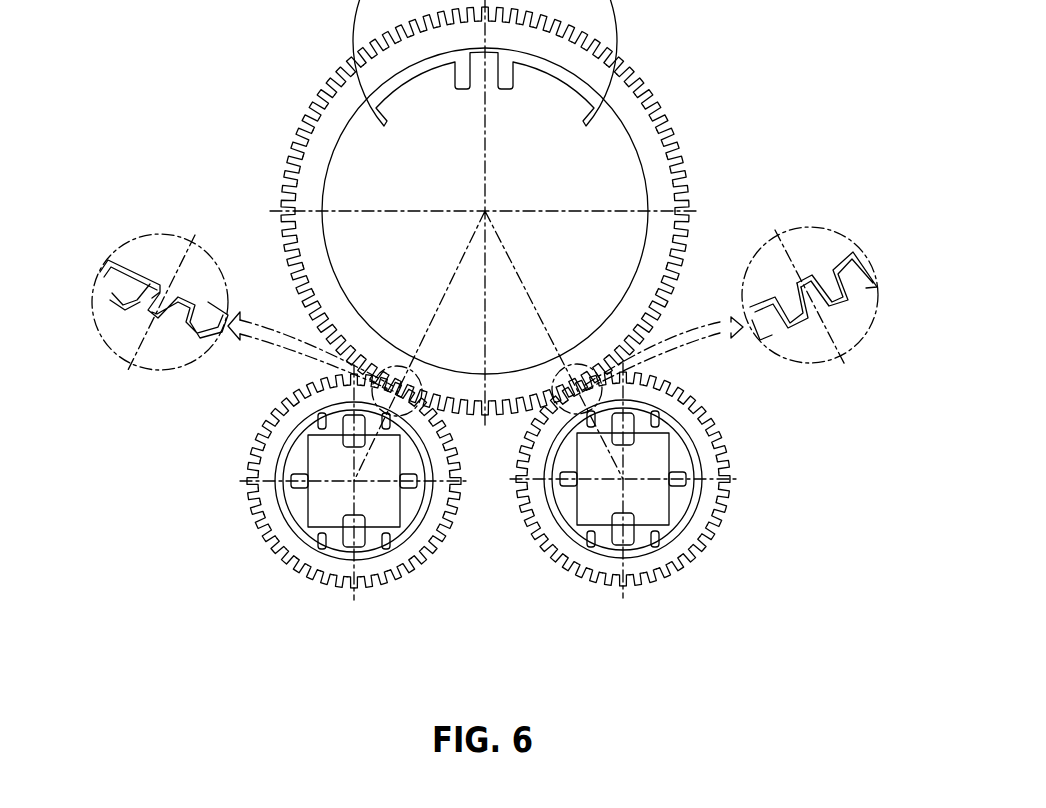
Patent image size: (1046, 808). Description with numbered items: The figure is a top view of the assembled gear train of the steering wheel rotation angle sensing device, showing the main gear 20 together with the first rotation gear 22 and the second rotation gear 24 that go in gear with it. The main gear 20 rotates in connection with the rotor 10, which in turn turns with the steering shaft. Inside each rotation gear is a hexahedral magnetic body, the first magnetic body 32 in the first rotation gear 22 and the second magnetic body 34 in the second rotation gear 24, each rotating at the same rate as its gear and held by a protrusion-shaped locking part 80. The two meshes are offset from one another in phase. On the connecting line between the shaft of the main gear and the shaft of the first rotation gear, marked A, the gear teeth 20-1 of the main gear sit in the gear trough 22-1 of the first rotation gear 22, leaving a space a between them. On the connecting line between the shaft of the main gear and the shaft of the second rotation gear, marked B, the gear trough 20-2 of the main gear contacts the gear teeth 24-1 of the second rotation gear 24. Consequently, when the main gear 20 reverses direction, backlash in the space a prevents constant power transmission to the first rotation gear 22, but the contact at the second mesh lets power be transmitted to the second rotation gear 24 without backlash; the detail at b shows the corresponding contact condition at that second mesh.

The rotor 10 is at (350, 143).
The main gear 20 is at (663, 115).
The gear teeth of main gear 20-1 is at (160, 288).
The gear trough of main gear 20-2 is at (802, 275).
The first rotation gear 22 is at (260, 518).
The gear trough of first rotation gear 22-1 is at (158, 323).
The second rotation gear 24 is at (717, 517).
The gear teeth of second rotation gear 24-1 is at (840, 297).
The first magnetic body 32 is at (310, 460).
The second magnetic body 34 is at (660, 450).
The locking part 80 is at (362, 533).
The connecting line between shaft of main gear and shaft of first rotation gear A is at (163, 235).
The connecting line between shaft of main gear and shaft of second rotation gear B is at (767, 243).
The space a is at (157, 297).
The gap b is at (793, 293).